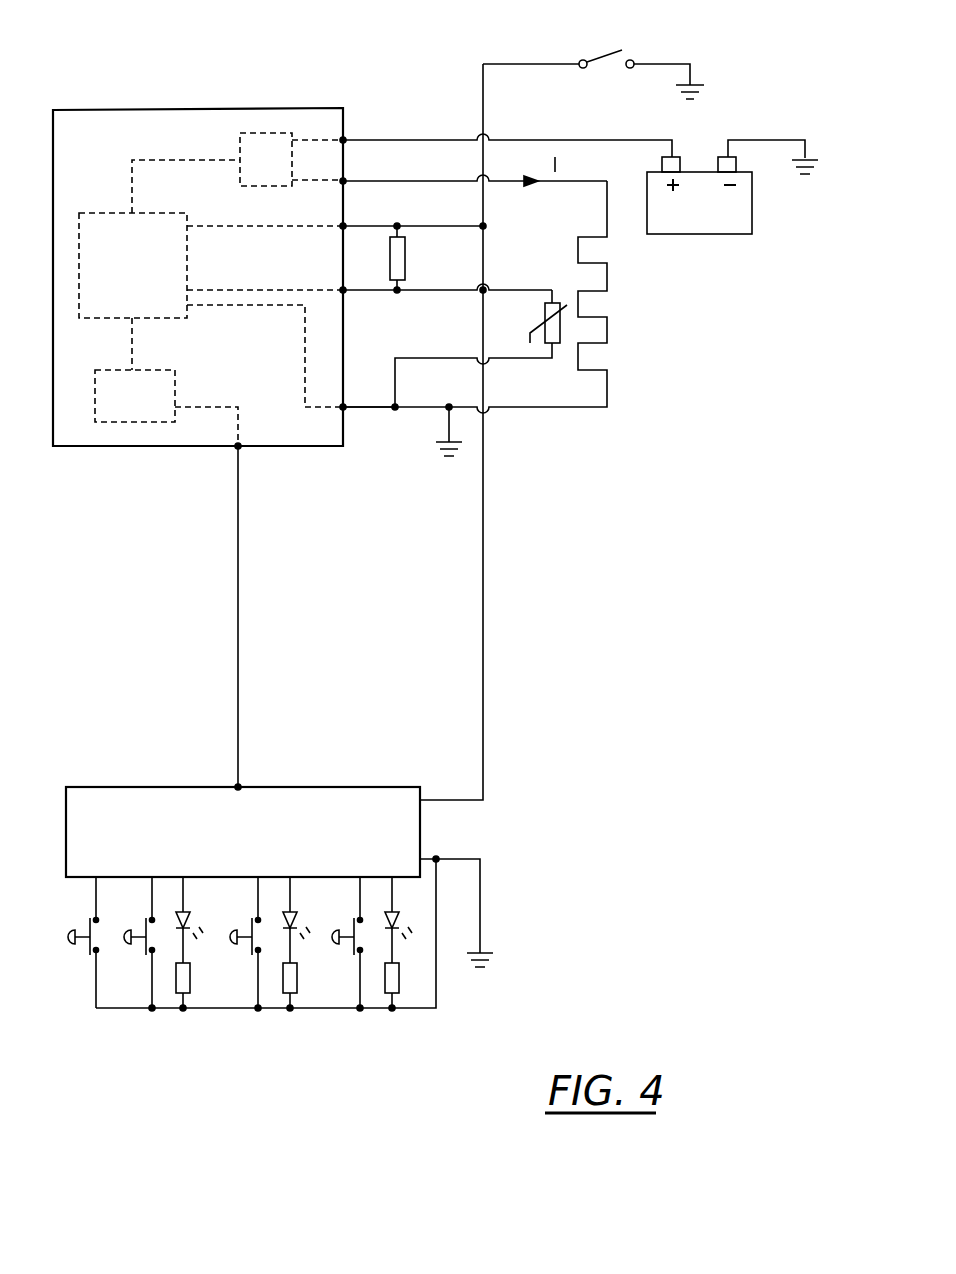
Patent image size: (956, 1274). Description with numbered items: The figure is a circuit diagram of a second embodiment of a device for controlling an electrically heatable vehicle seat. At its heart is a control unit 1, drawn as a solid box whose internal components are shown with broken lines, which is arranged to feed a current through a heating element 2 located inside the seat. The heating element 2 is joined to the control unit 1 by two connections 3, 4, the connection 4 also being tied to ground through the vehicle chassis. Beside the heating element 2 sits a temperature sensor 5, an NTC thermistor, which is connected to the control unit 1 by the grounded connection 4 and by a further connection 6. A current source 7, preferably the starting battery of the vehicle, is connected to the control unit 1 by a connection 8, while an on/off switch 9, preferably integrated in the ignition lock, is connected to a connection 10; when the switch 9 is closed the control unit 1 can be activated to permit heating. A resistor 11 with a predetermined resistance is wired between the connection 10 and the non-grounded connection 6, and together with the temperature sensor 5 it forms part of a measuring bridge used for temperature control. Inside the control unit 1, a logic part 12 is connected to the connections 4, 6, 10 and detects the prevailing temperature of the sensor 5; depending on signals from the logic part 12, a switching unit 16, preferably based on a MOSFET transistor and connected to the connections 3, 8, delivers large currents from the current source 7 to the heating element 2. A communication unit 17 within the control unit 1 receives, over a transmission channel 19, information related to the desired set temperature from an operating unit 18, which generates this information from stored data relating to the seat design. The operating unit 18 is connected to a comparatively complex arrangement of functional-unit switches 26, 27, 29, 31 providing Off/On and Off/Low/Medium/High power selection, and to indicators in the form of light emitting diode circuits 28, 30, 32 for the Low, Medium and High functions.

The control unit 1 is at (70, 120).
The heating element 2 is at (607, 330).
The connection 3 is at (343, 181).
The connection 4 is at (343, 410).
The temperature sensor 5 is at (560, 340).
The connection 6 is at (342, 290).
The current source 7 is at (744, 224).
The connection 8 is at (345, 127).
The on/off switch 9 is at (600, 52).
The connection 10 is at (343, 226).
The resistor 11 is at (410, 237).
The logic part 12 is at (78, 213).
The switching unit 16 is at (243, 133).
The communication unit 17 is at (87, 438).
The operating unit 18 is at (97, 785).
The transmission channel 19 is at (238, 465).
The switch 26 is at (70, 945).
The switch 27 is at (127, 945).
The light emitting diode circuit 28 is at (177, 918).
The switch 29 is at (233, 945).
The light emitting diode circuit 30 is at (283, 918).
The switch 31 is at (335, 945).
The light emitting diode circuit 32 is at (397, 915).